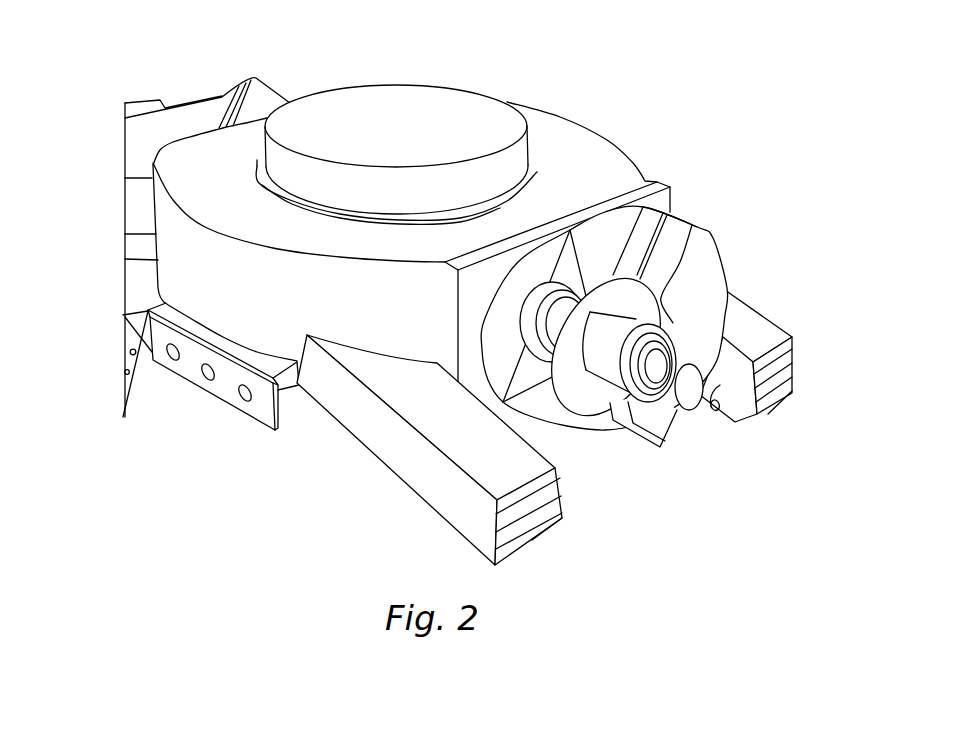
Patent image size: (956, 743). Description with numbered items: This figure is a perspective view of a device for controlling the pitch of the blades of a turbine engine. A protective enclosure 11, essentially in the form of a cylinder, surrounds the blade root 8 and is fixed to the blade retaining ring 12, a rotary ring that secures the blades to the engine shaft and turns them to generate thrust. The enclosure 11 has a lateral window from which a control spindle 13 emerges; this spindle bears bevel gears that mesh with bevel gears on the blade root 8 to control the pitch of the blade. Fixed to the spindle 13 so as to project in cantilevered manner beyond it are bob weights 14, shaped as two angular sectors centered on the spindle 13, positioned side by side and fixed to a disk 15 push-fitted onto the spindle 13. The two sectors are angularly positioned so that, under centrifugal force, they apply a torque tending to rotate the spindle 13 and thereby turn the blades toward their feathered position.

The blade root 8 is at (477, 121).
The protective enclosure 11 is at (190, 177).
The blade retaining ring 12 is at (427, 460).
The control spindle 13 is at (657, 377).
The bob weights 14 is at (697, 257).
The disk 15 is at (590, 400).